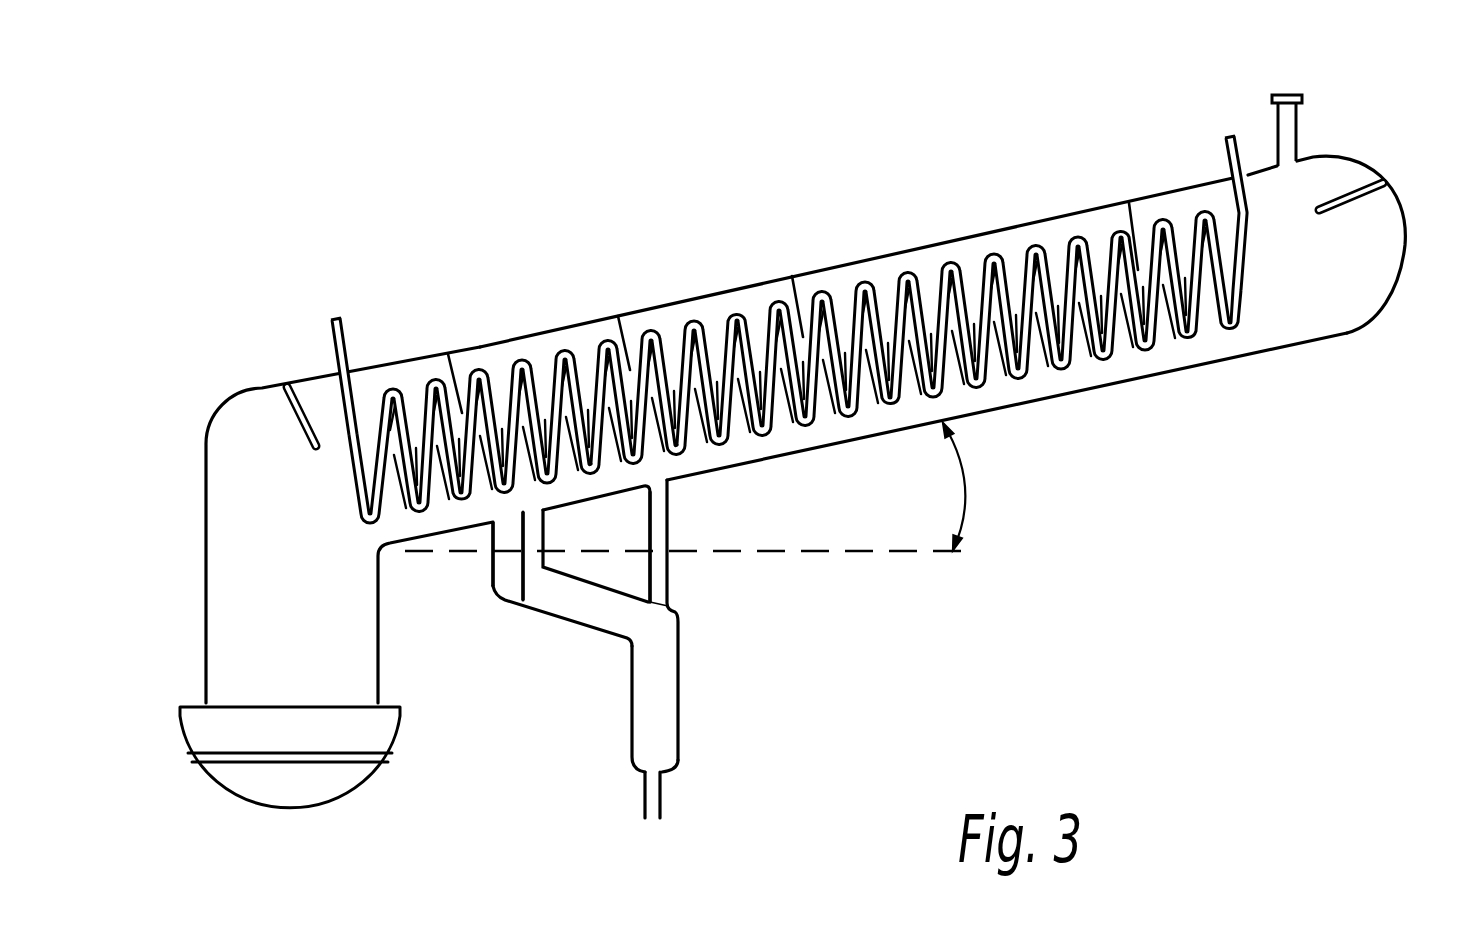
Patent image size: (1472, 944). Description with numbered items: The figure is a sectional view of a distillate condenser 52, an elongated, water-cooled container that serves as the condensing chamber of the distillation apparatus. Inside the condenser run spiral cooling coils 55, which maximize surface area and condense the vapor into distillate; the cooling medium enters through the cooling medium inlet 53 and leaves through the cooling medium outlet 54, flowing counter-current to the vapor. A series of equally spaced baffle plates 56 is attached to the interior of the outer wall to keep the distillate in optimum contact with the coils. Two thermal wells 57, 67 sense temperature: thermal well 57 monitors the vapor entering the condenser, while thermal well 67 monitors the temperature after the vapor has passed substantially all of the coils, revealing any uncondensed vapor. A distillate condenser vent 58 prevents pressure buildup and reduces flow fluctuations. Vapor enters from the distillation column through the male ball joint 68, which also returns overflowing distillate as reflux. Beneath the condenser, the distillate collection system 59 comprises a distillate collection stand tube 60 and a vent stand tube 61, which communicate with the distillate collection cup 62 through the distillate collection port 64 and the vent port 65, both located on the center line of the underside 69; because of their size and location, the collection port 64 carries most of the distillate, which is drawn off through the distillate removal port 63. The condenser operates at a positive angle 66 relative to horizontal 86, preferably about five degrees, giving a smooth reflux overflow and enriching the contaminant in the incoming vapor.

The distillate condenser 52 is at (818, 268).
The cooling medium inlet 53 is at (1228, 135).
The cooling medium outlet 54 is at (337, 317).
The cooling coils 55 is at (650, 353).
The baffle plates 56 is at (977, 280).
The thermal well 57 is at (285, 384).
The distillate condenser vent 58 is at (1290, 96).
The distillate collection system 59 is at (678, 620).
The distillate collection stand tube 60 is at (490, 572).
The vent stand tube 61 is at (645, 567).
The distillate collection cup 62 is at (678, 765).
The distillate removal port 63 is at (662, 808).
The distillate collection port 64 is at (523, 600).
The vent port 65 is at (660, 487).
The positive angle 66 is at (967, 485).
The thermal well 67 is at (1385, 182).
The male ball joint 68 is at (323, 812).
The underside 69 is at (1292, 352).
The horizontal 86 is at (970, 550).